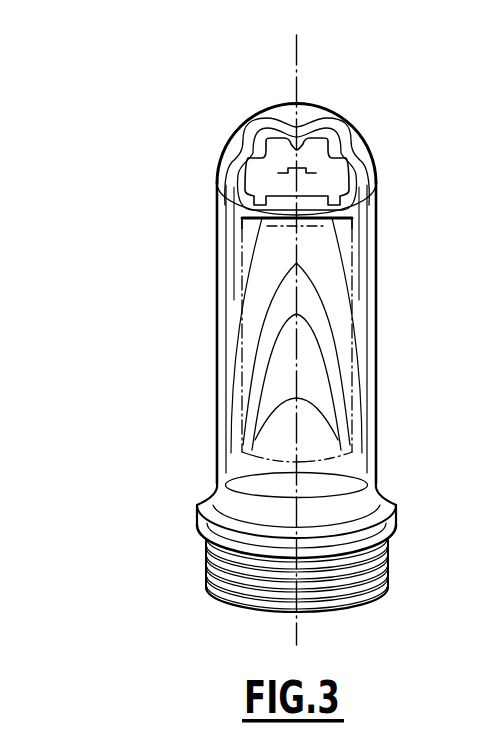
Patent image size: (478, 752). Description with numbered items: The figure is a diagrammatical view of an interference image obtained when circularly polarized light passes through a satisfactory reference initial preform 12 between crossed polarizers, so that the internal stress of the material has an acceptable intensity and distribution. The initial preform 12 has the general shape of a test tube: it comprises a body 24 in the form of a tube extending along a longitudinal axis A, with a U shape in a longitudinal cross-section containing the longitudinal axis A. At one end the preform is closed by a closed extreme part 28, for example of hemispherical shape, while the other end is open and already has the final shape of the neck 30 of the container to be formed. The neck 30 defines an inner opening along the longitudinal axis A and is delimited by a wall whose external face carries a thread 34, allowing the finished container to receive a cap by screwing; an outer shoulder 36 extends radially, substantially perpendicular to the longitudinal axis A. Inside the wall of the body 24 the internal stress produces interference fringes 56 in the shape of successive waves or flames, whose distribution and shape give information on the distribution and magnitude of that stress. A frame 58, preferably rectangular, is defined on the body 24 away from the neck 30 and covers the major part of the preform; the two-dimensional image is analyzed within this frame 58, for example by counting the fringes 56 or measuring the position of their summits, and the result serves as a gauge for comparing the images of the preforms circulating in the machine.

The initial preform 12 is at (279, 353).
The body 24 is at (356, 316).
The closed extreme part 28 is at (317, 118).
The interference fringes 56 is at (273, 290).
The frame 58 is at (355, 425).
The outer shoulder 36 is at (201, 505).
The neck 30 is at (278, 604).
The thread 34 is at (340, 592).
The longitudinal axis A is at (296, 55).